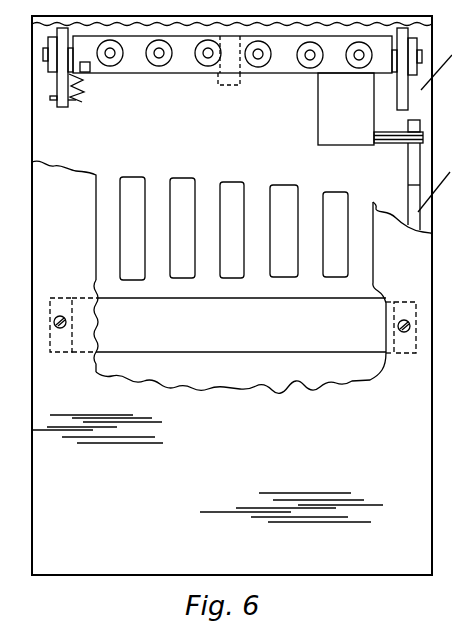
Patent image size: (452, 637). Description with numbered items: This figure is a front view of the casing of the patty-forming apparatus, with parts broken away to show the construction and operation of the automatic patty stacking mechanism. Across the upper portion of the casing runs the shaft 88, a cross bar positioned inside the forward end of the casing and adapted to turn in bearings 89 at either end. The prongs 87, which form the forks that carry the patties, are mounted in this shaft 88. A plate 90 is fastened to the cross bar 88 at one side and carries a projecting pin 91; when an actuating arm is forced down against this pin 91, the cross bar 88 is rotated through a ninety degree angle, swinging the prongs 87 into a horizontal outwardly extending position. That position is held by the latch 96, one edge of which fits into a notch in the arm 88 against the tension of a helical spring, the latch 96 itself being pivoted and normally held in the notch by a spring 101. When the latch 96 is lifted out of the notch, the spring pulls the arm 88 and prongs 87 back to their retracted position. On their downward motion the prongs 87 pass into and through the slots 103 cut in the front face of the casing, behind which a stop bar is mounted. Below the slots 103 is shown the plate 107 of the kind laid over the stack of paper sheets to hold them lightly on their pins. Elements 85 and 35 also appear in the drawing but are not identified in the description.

The prongs 87 is at (206, 61).
The shaft 88 is at (254, 61).
The bearings 89 is at (53, 70).
The latch 96 is at (86, 73).
The spring 101 is at (70, 104).
The plate 90 is at (333, 110).
The projecting pin 91 is at (383, 143).
The right bracket 85 is at (420, 53).
The slots 103 is at (236, 190).
The plate 107 is at (233, 335).
The frame member 35 is at (435, 188).